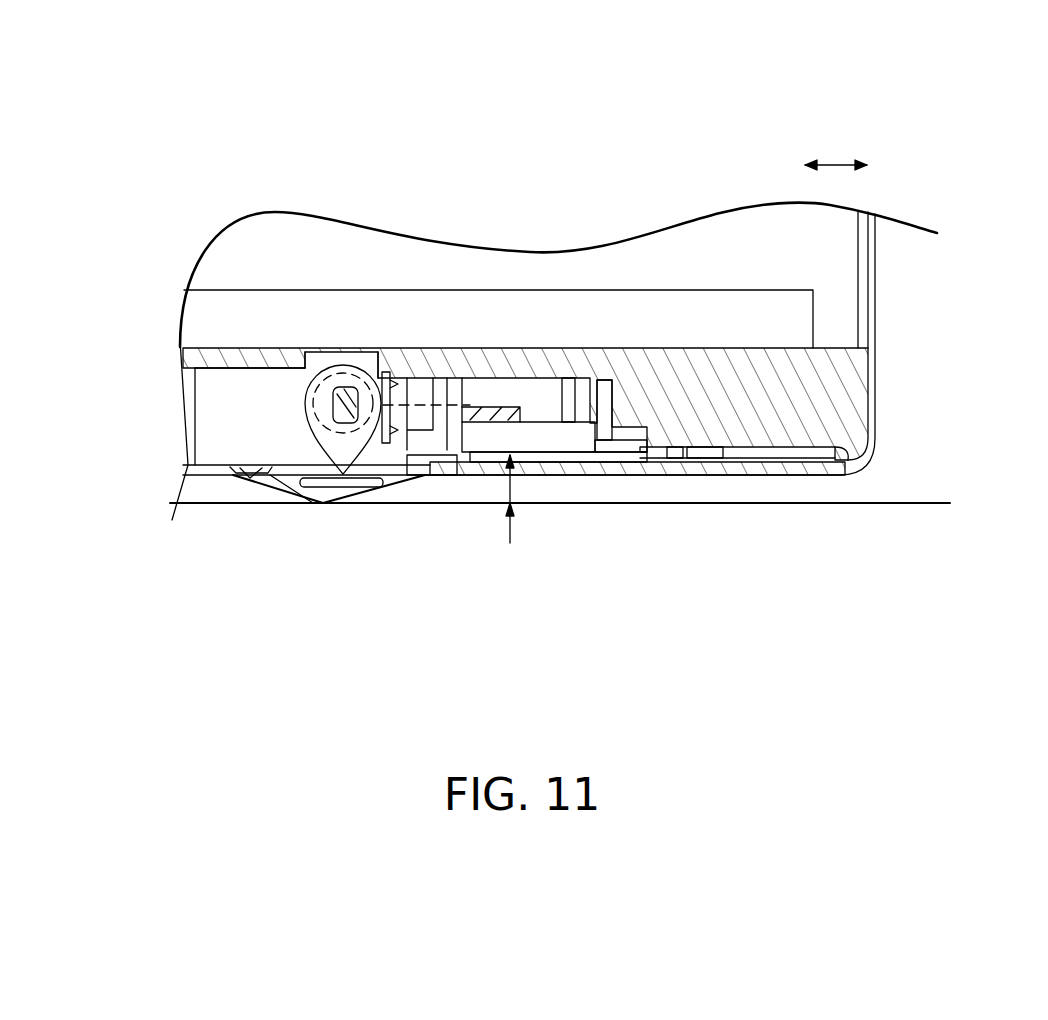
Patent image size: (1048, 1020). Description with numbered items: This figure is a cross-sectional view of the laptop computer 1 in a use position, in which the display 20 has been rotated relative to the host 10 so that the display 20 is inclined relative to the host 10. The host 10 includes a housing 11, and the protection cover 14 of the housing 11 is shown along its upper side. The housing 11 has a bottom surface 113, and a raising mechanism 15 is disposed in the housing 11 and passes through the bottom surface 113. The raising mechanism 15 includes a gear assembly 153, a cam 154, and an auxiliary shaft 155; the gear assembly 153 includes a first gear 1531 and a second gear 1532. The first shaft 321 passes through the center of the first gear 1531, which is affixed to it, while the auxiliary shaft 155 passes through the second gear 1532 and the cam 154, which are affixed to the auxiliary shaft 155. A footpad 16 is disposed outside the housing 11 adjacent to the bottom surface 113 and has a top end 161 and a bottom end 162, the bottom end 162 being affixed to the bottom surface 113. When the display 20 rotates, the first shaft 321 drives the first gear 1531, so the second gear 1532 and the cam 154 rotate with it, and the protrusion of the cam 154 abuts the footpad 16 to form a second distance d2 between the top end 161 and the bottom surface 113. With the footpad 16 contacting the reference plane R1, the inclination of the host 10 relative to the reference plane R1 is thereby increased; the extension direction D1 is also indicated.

The laptop computer 1 is at (73, 85).
The host 10 is at (884, 400).
The housing 11 is at (741, 478).
The bottom surface 113 is at (628, 478).
The protection cover 14 is at (738, 310).
The raising mechanism 15 is at (242, 128).
The gear assembly 153 is at (383, 171).
The first gear 1531 is at (383, 377).
The second gear 1532 is at (470, 378).
The cam 154 is at (313, 440).
The auxiliary shaft 155 is at (376, 370).
The footpad 16 is at (290, 503).
The top end 161 is at (338, 490).
The bottom end 162 is at (250, 473).
The display 20 is at (884, 290).
The first shaft 321 is at (380, 420).
The reference plane R1 is at (950, 503).
The second distance d2 is at (510, 543).
The extension direction D1 is at (836, 149).